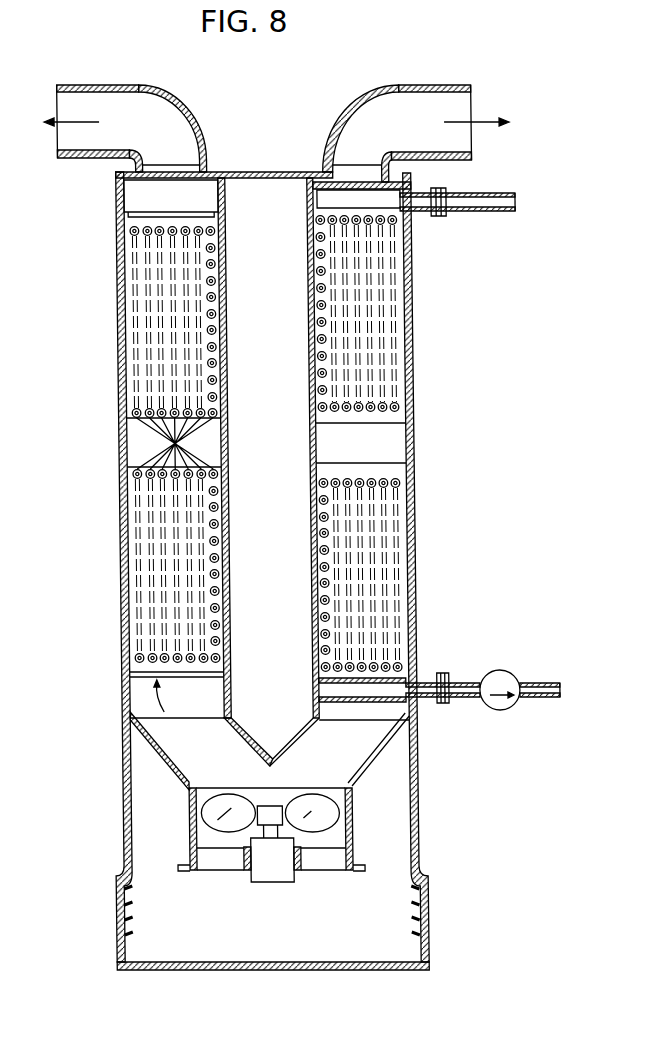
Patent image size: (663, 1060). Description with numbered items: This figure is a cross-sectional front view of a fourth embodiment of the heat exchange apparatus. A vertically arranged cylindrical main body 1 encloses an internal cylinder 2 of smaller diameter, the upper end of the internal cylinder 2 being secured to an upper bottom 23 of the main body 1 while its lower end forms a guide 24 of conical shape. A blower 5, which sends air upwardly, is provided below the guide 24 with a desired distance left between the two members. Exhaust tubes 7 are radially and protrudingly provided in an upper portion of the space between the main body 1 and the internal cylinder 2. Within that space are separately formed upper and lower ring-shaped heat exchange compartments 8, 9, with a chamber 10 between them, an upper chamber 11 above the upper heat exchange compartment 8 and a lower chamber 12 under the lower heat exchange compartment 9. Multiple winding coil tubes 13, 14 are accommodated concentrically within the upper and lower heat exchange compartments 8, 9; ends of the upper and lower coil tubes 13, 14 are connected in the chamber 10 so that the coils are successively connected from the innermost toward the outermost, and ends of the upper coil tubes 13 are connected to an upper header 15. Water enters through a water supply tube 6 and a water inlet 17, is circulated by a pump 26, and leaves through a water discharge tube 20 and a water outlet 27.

The main body 1 is at (120, 393).
The internal cylinder 2 is at (314, 444).
The blower 5 is at (320, 826).
The water supply tube 6 is at (470, 195).
The exhaust tubes 7 is at (110, 100).
The upper heat exchange compartment 8 is at (126, 283).
The lower heat exchange compartment 9 is at (126, 537).
The chamber 10 is at (143, 449).
The upper chamber 11 is at (126, 201).
The lower chamber 12 is at (136, 698).
The upper coil tubes 13 is at (146, 346).
The lower coil tubes 14 is at (150, 593).
The upper header 15 is at (355, 184).
The water inlet 17 is at (425, 194).
The water discharge tube 20 is at (465, 699).
The upper bottom 23 is at (258, 178).
The guide 24 is at (280, 760).
The pump 26 is at (496, 671).
The water outlet 27 is at (429, 681).